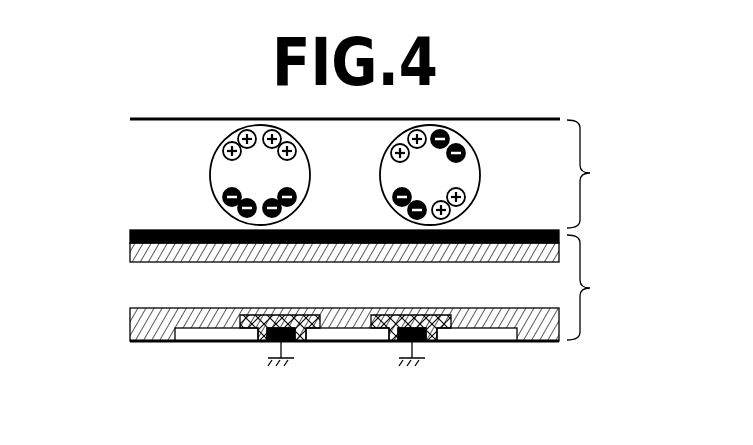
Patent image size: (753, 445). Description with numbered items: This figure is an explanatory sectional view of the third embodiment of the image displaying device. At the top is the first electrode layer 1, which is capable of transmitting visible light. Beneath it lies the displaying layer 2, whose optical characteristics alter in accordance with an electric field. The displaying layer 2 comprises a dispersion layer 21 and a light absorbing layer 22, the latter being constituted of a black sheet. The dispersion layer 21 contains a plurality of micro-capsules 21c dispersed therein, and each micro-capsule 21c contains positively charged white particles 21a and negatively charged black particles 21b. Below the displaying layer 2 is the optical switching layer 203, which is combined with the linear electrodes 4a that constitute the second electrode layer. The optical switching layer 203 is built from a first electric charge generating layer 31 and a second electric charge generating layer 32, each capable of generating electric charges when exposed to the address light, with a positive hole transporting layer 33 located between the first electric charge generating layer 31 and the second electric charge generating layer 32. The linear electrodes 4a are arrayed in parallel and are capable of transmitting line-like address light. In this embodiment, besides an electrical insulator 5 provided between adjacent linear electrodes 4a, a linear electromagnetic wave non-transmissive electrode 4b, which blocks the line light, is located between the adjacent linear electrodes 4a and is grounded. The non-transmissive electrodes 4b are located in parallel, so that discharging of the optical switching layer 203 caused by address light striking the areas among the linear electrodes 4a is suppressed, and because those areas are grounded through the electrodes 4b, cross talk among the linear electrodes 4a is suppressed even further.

The first electrode layer 1 is at (534, 118).
The displaying layer 2 is at (588, 174).
The dispersion layer 21 is at (140, 174).
The positively charged white particles 21a is at (294, 138).
The negatively charged black particles 21b is at (305, 188).
The micro-capsule 21c is at (214, 160).
The light absorbing layer 22 is at (130, 236).
The first electric charge generating layer 31 is at (130, 252).
The second electric charge generating layer 32 is at (130, 320).
The positive hole transporting layer 33 is at (140, 285).
The optical switching layer 203 is at (604, 287).
The linear electrode 4a is at (365, 343).
The linear electromagnetic wave non-transmissive electrode 4b is at (292, 343).
The electrical insulator 5 is at (260, 342).